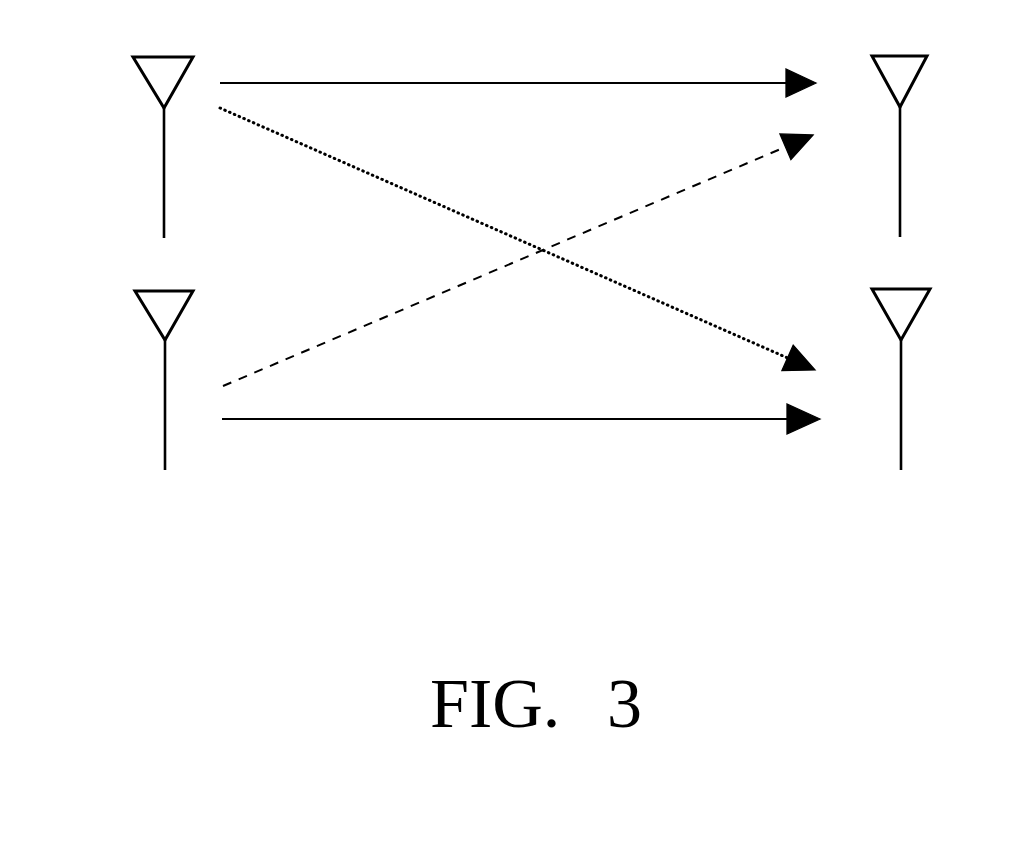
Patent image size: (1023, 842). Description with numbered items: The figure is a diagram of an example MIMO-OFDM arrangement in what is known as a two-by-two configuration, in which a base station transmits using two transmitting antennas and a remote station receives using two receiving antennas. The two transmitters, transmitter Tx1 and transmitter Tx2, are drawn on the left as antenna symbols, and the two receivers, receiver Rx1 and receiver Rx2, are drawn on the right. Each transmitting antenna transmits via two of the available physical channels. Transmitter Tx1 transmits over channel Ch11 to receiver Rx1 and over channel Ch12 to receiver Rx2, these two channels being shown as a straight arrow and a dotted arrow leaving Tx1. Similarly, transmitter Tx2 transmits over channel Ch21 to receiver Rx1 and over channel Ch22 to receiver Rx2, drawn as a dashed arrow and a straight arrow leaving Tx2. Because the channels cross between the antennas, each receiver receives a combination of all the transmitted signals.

The transmitter Tx1 is at (127, 147).
The transmitter Tx2 is at (127, 380).
The receiver Rx1 is at (930, 146).
The receiver Rx2 is at (938, 379).
The channel Ch11 is at (518, 65).
The channel Ch12 is at (520, 245).
The channel Ch21 is at (520, 254).
The channel Ch22 is at (521, 441).